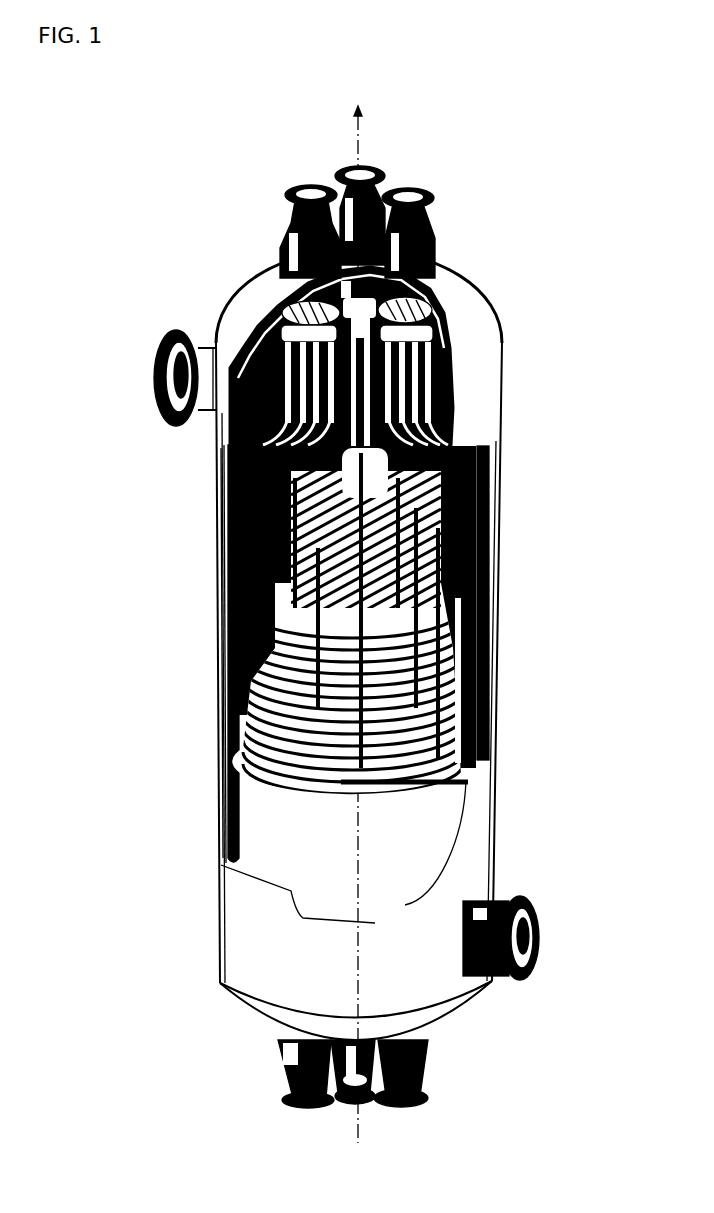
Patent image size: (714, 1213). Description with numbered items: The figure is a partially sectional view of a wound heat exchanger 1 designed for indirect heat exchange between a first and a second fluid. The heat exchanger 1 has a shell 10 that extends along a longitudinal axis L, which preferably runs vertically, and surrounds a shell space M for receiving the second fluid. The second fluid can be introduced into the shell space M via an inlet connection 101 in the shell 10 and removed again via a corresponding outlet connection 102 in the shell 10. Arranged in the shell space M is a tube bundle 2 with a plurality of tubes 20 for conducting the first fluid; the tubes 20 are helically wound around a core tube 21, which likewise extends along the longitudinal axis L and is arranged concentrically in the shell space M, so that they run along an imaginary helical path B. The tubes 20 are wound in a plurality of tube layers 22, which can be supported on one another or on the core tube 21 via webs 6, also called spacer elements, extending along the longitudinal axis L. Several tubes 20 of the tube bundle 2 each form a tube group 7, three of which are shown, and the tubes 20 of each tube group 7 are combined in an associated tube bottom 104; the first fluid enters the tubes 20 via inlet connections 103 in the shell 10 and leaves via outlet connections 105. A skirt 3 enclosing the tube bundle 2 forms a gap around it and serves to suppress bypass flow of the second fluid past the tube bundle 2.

The wound heat exchanger 1 is at (365, 594).
The tube bundle 2 is at (430, 760).
The skirt 3 is at (273, 847).
The webs 6 is at (222, 652).
The tube group 7 is at (245, 335).
The shell 10 is at (247, 942).
The tubes 20 is at (482, 713).
The core tube 21 is at (215, 485).
The tube layers 22 is at (420, 800).
The inlet connection 101 is at (148, 400).
The outlet connection 102 is at (520, 962).
The inlet connections 103 is at (345, 1090).
The tube bottom 104 is at (262, 300).
The outlet connections 105 is at (400, 185).
The longitudinal axis L is at (365, 624).
The shell space M is at (213, 545).
The helical path B is at (485, 623).